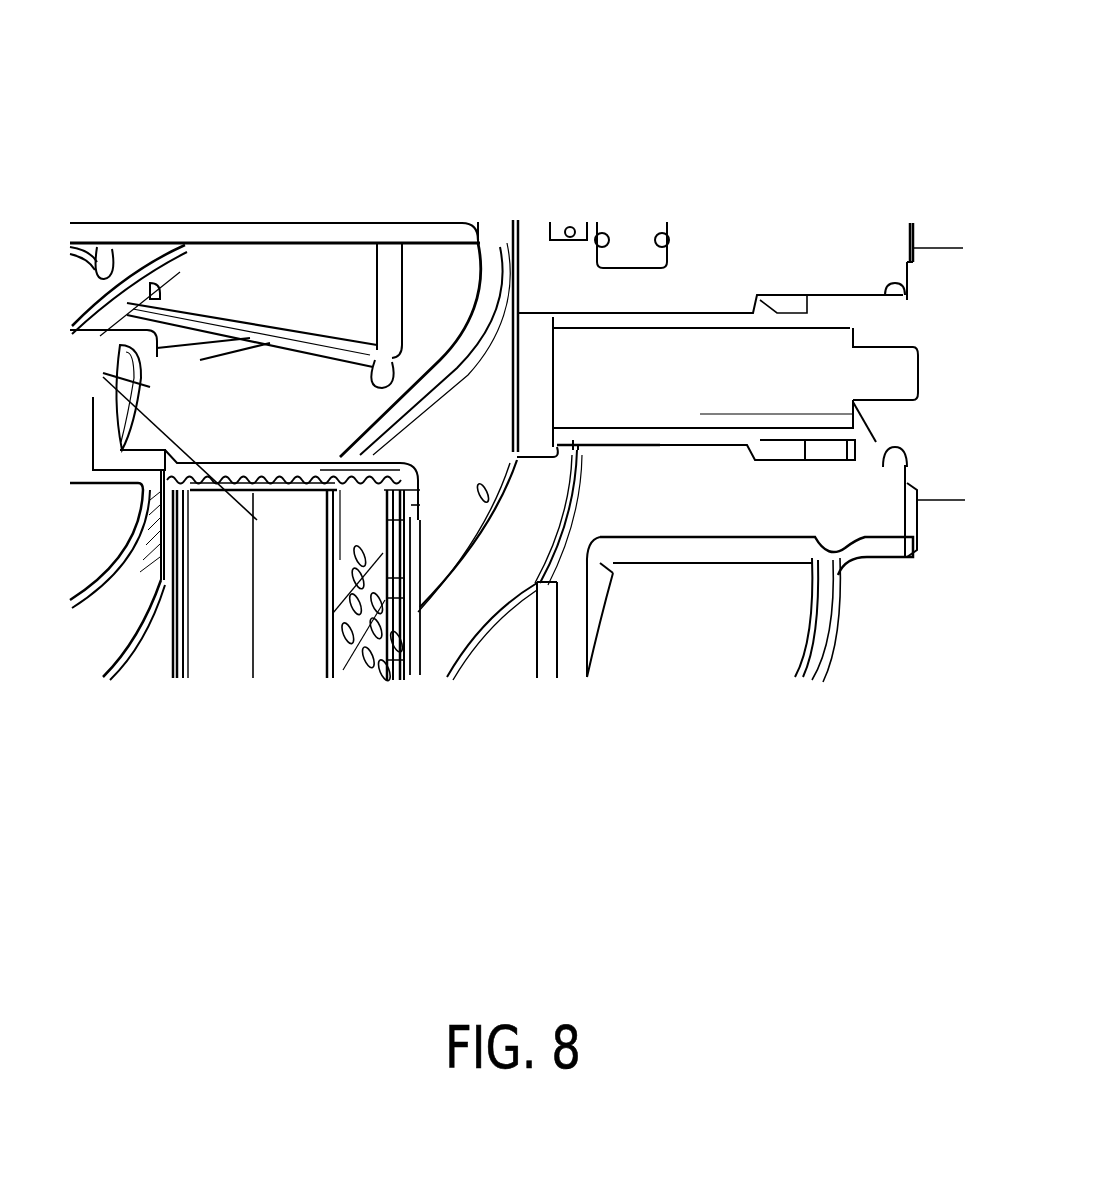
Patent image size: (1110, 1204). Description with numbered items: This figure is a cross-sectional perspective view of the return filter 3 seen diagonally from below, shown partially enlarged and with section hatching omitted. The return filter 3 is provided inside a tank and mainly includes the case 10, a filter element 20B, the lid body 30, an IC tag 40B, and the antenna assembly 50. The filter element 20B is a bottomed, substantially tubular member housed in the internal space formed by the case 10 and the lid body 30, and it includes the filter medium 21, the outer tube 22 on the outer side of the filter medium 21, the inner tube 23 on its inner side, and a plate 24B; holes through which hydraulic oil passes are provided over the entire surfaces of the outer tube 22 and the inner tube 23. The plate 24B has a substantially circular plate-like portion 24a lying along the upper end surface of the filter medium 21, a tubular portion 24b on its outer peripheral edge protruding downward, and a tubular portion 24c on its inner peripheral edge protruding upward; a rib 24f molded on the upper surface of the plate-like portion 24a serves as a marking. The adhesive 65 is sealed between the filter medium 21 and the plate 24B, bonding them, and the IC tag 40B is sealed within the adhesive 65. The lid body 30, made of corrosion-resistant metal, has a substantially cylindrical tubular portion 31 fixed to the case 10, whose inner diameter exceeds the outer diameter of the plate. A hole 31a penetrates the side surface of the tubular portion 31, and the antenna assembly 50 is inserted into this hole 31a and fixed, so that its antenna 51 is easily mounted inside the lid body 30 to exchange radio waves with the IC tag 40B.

The return filter 3 is at (848, 33).
The case 10 is at (597, 580).
The filter element 20B is at (500, 900).
The filter medium 21 is at (245, 652).
The outer tube 22 is at (390, 655).
The inner tube 23 is at (187, 677).
The plate 24B is at (550, 830).
The plate-like portion 24a is at (322, 490).
The tubular portion 24b is at (403, 490).
The tubular portion 24c is at (300, 468).
The rib 24f is at (416, 460).
The lid body 30 is at (600, 114).
The tubular portion 31 is at (560, 270).
The hole 31a is at (780, 297).
The IC tag 40B is at (325, 492).
The antenna assembly 50 is at (923, 280).
The antenna 51 is at (707, 347).
The adhesive 65 is at (160, 582).